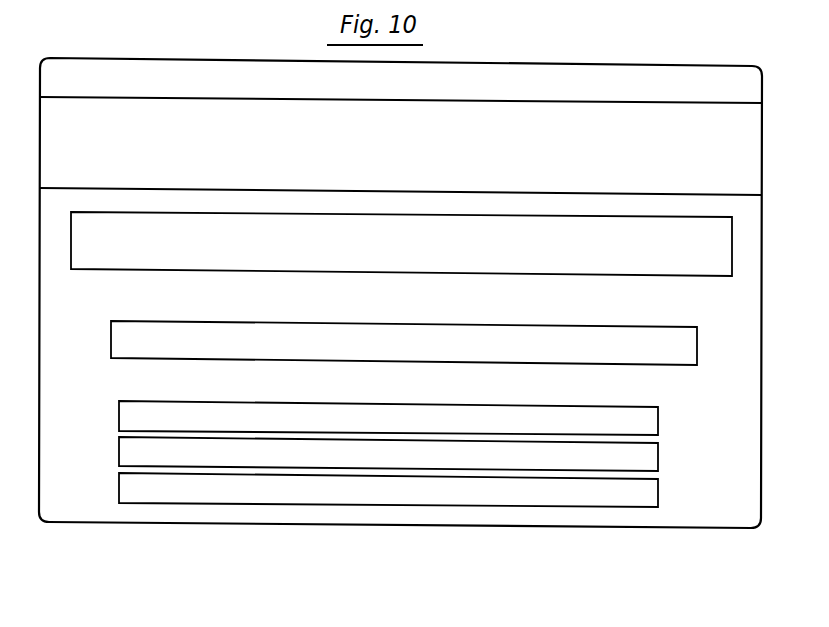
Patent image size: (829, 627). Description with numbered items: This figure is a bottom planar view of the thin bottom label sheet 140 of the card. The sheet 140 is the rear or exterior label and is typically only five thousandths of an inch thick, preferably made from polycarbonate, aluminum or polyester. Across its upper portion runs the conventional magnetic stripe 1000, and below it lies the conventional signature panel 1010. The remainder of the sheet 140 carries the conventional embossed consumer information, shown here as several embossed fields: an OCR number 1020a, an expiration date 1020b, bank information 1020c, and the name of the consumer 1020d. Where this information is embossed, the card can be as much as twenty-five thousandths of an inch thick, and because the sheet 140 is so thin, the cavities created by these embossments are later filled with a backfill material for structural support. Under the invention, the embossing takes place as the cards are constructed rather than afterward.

The bottom label sheet 140 is at (394, 527).
The magnetic stripe 1000 is at (537, 159).
The signature panel 1010 is at (530, 255).
The OCR number 1020a is at (548, 355).
The expiration date 1020b is at (545, 429).
The bank information 1020c is at (545, 466).
The name of the consumer 1020d is at (545, 504).